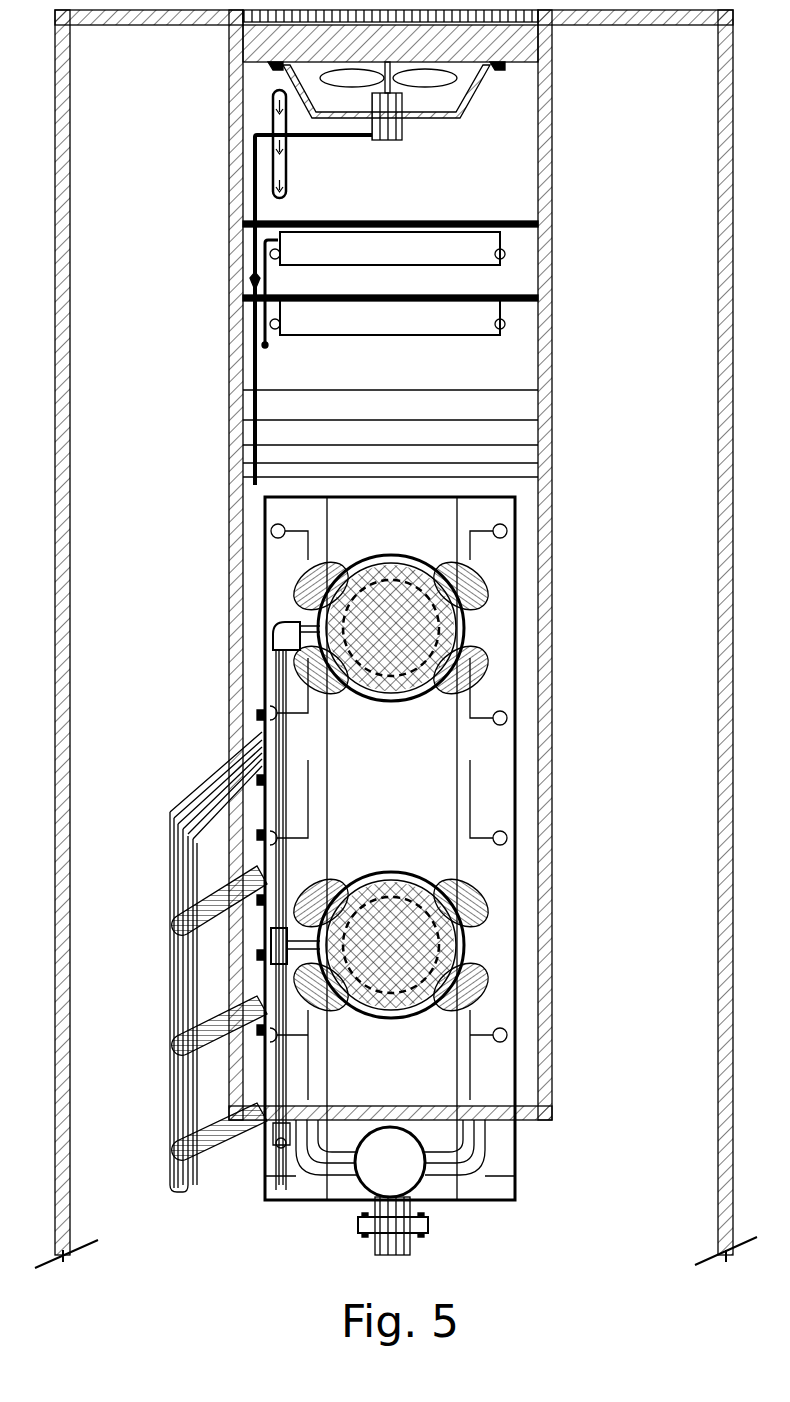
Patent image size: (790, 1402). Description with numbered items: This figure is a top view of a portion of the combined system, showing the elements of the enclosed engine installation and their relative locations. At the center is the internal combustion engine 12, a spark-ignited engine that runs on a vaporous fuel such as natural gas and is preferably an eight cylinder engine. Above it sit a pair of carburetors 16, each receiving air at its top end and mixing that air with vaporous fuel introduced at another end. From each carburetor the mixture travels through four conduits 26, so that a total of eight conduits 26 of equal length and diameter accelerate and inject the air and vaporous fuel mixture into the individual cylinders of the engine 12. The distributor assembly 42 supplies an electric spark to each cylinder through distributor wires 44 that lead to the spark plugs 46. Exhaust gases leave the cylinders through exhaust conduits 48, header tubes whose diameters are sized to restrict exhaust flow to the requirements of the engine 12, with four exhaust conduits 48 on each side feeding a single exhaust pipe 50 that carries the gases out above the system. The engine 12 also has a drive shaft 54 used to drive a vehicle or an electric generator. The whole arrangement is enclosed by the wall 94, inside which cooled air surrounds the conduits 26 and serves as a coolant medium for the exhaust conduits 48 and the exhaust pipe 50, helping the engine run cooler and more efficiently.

The internal combustion engine 12 is at (481, 1190).
The carburetors 16 is at (377, 716).
The conduits 26 is at (446, 566).
The distributor assembly 42 is at (377, 1174).
The distributor wires 44 is at (519, 1175).
The spark plugs 46 is at (575, 1017).
The exhaust conduits 48 is at (182, 1150).
The exhaust pipe 50 is at (172, 1086).
The drive shaft 54 is at (375, 1247).
The wall 94 is at (552, 910).